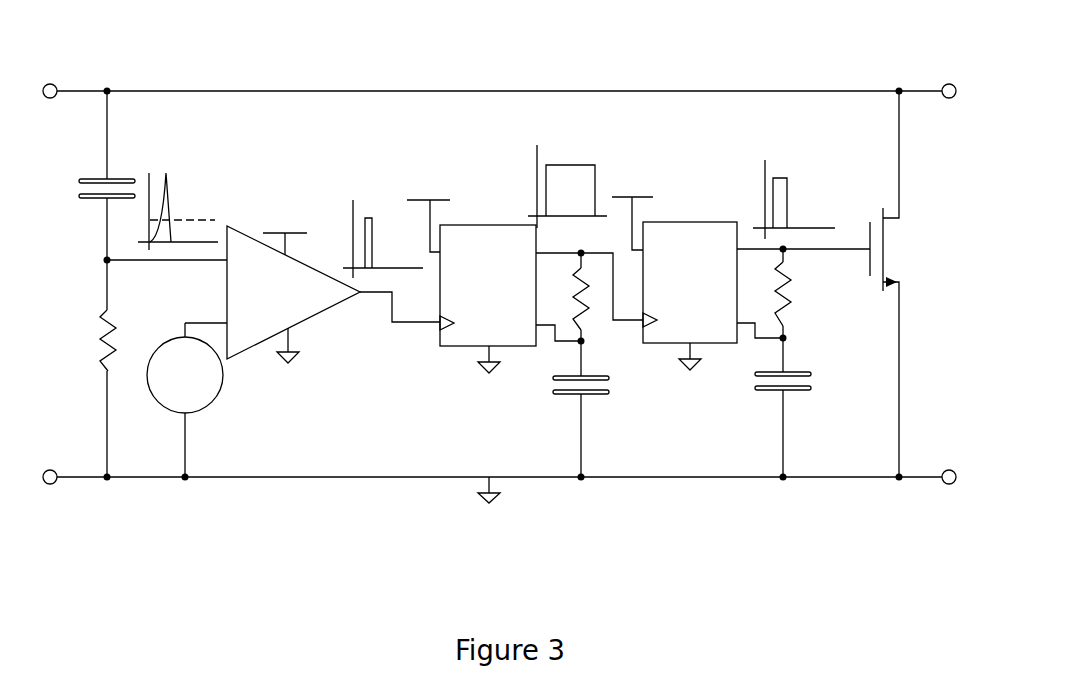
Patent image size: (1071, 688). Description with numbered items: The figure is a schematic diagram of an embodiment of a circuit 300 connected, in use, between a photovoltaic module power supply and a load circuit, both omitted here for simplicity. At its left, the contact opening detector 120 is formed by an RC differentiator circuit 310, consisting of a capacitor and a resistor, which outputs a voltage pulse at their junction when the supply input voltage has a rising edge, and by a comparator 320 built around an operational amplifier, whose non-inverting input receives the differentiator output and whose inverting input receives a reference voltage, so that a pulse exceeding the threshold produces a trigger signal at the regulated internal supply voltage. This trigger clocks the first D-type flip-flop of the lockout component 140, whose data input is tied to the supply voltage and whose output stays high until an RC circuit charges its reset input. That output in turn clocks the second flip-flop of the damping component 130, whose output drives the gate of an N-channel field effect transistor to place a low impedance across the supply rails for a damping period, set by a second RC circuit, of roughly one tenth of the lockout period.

The circuit 300 is at (869, 34).
The RC differentiator circuit 310 is at (70, 85).
The comparator 320 is at (230, 368).
The contact opening detector 120 is at (380, 492).
The lockout component 140 is at (393, 493).
The damping component 130 is at (613, 493).